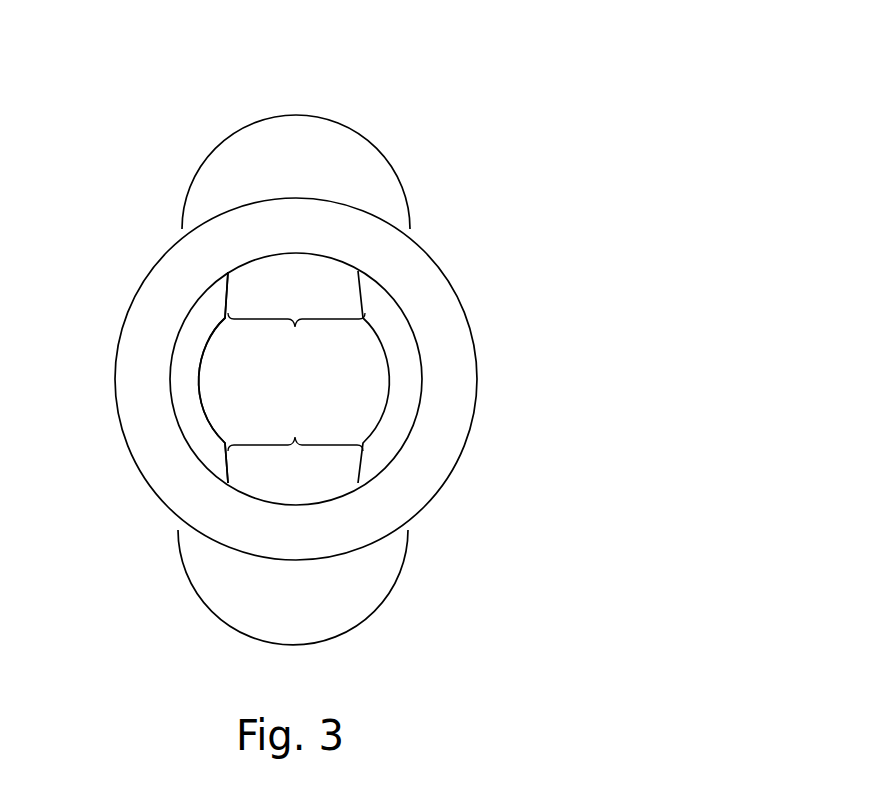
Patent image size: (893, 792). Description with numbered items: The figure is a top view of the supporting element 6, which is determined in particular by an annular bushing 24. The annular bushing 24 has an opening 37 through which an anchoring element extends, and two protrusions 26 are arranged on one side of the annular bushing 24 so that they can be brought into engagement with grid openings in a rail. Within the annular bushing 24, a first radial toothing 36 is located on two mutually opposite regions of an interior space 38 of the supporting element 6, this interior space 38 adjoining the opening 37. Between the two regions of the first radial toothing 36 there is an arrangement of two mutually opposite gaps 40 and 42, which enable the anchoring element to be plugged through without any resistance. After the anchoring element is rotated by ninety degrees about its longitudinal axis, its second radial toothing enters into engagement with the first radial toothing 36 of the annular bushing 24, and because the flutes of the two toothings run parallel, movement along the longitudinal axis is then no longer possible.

The supporting element 6 is at (445, 181).
The annular bushing 24 is at (435, 337).
The protrusions 26 is at (327, 141).
The first radial toothing 36 is at (192, 420).
The opening 37 is at (242, 299).
The interior space 38 is at (307, 275).
The gap 40 is at (296, 335).
The gap 42 is at (295, 430).